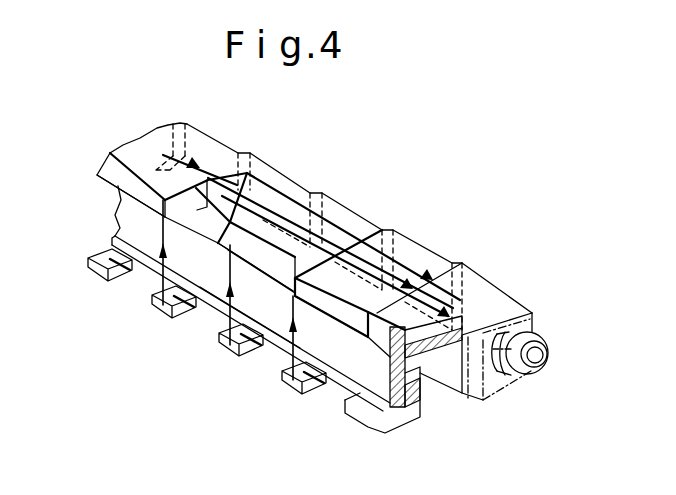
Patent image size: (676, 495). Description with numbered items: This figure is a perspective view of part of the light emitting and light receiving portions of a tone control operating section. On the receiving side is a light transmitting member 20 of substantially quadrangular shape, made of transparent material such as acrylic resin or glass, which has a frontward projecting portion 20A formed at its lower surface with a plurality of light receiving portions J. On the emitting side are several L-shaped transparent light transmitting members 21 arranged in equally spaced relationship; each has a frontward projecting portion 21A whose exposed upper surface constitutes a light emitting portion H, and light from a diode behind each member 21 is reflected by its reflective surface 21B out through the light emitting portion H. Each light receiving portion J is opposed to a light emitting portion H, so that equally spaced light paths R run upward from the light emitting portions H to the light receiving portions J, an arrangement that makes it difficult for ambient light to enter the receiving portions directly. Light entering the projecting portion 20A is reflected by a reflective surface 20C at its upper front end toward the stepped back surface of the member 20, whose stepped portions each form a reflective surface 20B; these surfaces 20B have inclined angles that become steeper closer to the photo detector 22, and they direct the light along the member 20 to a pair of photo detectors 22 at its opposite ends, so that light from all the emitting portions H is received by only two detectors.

The light transmitting member 20 is at (488, 282).
The frontward projecting portion 20A is at (100, 168).
The reflective surface 20B is at (313, 192).
The reflective surface 20C is at (257, 257).
The light transmitting member 21 is at (427, 397).
The frontward projecting portion 21A is at (390, 433).
The reflective surface 21B is at (243, 352).
The photo detector 22 is at (545, 335).
The light emitting portion H is at (88, 262).
The light receiving portion J is at (117, 197).
The light path R is at (225, 300).